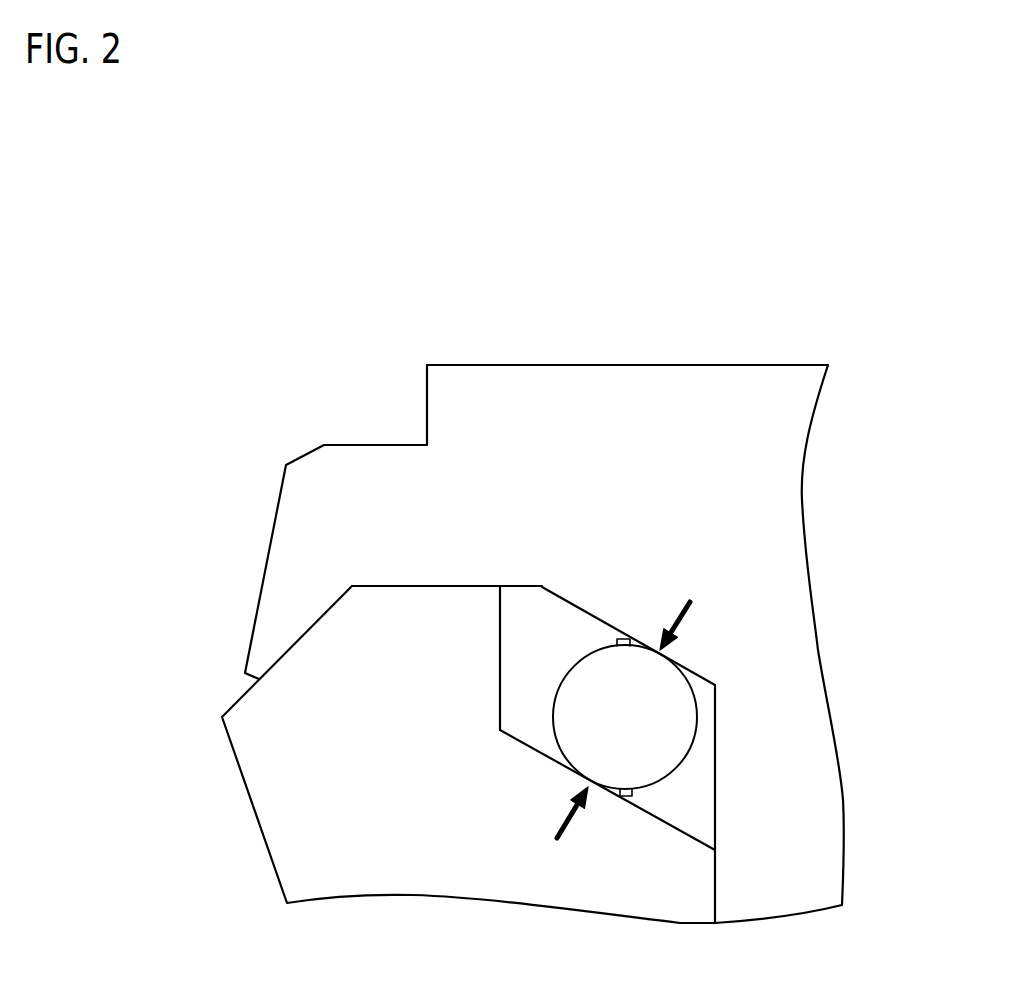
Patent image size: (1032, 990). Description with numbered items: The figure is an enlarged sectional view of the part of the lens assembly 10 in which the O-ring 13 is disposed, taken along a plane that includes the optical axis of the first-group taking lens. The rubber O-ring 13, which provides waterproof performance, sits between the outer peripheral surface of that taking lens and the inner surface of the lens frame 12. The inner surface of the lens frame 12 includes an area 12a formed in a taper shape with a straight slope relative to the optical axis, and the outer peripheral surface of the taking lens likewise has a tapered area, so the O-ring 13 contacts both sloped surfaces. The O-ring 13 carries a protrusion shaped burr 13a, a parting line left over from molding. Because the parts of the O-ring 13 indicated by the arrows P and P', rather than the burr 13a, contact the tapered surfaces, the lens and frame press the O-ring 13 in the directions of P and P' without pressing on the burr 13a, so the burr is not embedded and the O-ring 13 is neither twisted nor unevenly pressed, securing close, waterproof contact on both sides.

The lens assembly 10 is at (357, 264).
The lens frame 12 is at (778, 446).
The area 12a is at (583, 618).
The O-ring 13 is at (673, 730).
The protrusion shaped burr 13a is at (618, 640).
The arrow P is at (566, 829).
The arrow P' is at (686, 609).